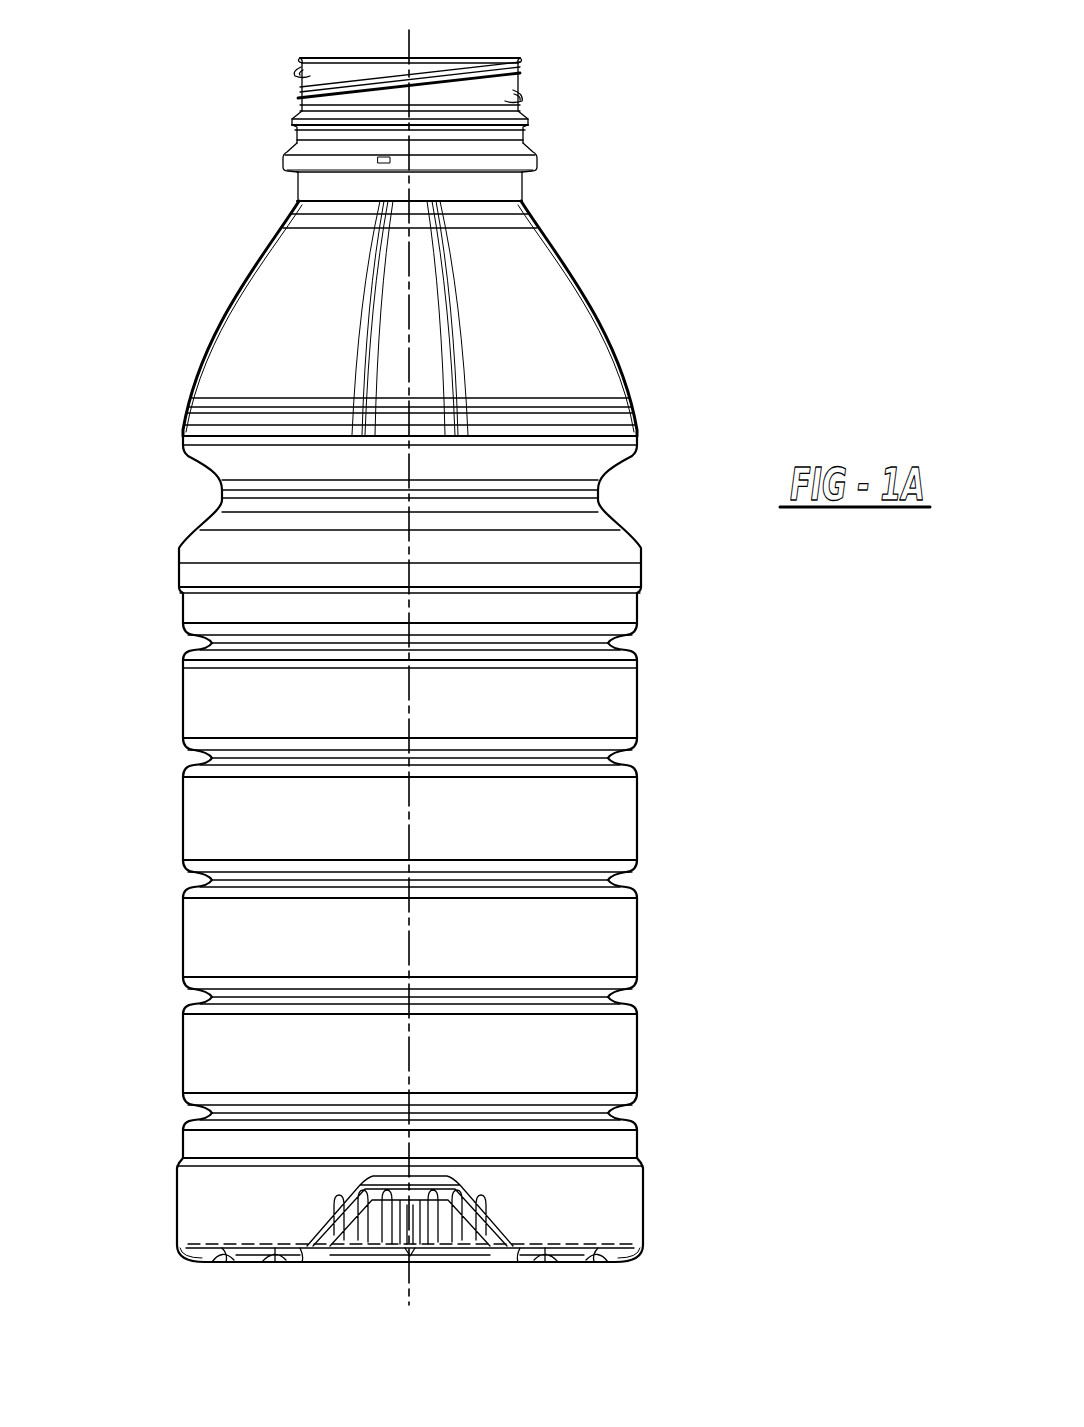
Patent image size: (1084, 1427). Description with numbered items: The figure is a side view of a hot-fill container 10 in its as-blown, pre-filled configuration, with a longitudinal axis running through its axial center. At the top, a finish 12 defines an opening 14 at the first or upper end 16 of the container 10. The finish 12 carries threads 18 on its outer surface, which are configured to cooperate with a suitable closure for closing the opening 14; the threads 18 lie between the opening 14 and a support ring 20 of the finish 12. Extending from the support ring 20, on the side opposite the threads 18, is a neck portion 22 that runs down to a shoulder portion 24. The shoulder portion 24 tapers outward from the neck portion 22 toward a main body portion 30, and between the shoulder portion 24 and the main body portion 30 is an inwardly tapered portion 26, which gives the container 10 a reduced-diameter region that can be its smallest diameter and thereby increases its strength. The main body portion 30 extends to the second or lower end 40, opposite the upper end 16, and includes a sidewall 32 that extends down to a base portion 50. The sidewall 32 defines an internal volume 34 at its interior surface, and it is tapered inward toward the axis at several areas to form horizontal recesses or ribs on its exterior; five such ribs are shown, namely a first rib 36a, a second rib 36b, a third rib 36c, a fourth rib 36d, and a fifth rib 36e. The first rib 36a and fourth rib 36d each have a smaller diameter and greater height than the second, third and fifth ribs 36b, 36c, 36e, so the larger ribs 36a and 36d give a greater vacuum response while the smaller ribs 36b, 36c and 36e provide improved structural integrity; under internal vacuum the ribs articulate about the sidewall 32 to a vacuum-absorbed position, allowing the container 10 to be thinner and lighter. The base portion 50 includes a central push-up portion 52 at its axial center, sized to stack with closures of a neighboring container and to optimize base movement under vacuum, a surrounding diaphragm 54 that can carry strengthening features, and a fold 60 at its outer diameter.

The container 10 is at (126, 99).
The finish 12 is at (300, 108).
The opening 14 is at (486, 57).
The first or upper end 16 is at (340, 57).
The threads 18 is at (523, 70).
The support ring 20 is at (533, 163).
The neck portion 22 is at (300, 187).
The shoulder portion 24 is at (243, 268).
The inwardly tapered portion 26 is at (600, 497).
The main body portion 30 is at (183, 703).
The sidewall 32 is at (635, 824).
The internal volume 34 is at (535, 712).
The first recess or rib 36a is at (608, 645).
The second recess or rib 36b is at (610, 760).
The third recess or rib 36c is at (618, 879).
The fourth recess or rib 36d is at (615, 996).
The fifth recess or rib 36e is at (617, 1114).
The second or lower end 40 is at (268, 1264).
The base portion 50 is at (227, 1266).
The central push-up portion 52 is at (462, 1187).
The diaphragm 54 is at (460, 1263).
The fold 60 is at (180, 1260).